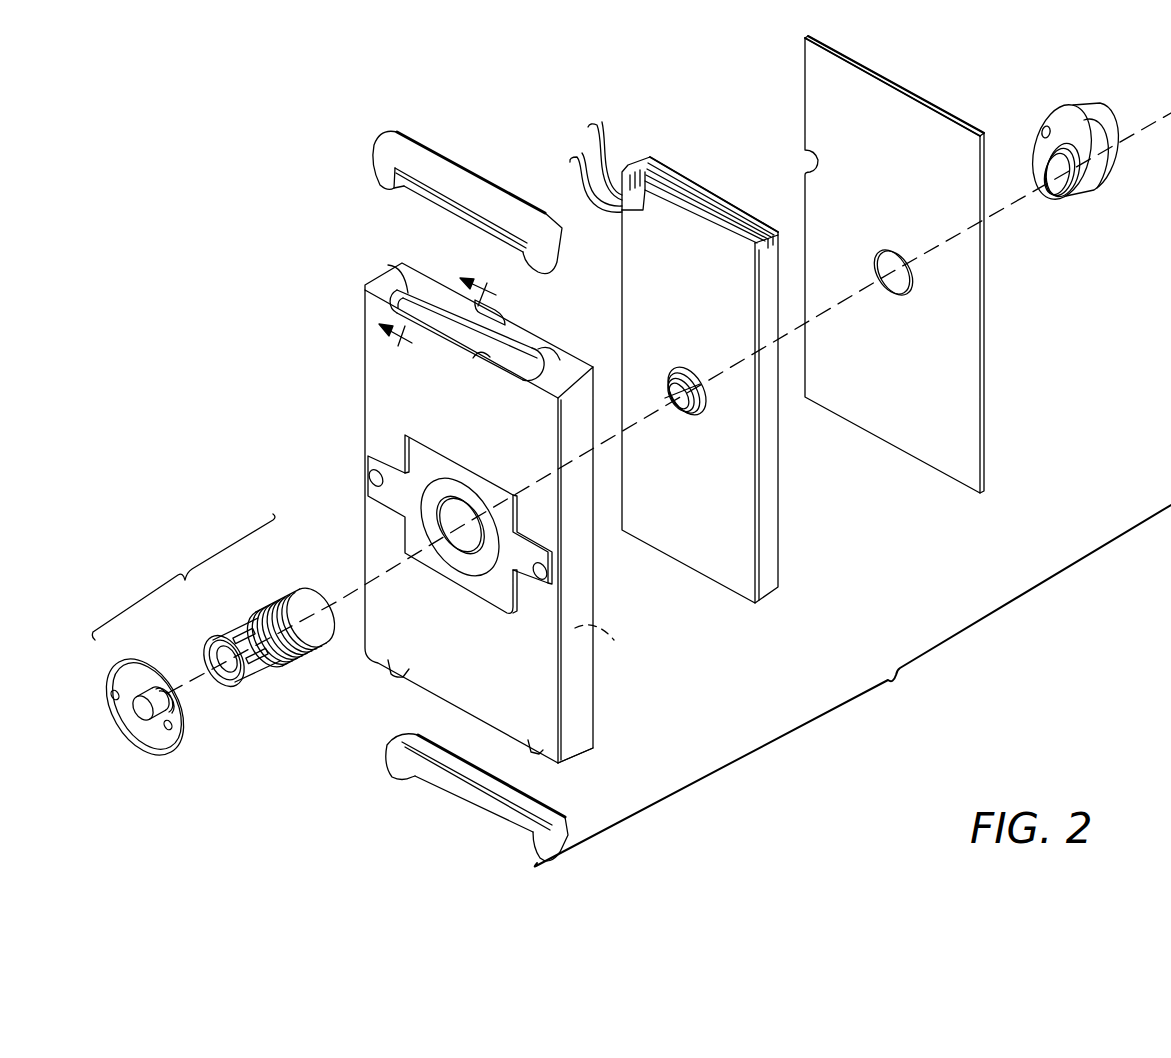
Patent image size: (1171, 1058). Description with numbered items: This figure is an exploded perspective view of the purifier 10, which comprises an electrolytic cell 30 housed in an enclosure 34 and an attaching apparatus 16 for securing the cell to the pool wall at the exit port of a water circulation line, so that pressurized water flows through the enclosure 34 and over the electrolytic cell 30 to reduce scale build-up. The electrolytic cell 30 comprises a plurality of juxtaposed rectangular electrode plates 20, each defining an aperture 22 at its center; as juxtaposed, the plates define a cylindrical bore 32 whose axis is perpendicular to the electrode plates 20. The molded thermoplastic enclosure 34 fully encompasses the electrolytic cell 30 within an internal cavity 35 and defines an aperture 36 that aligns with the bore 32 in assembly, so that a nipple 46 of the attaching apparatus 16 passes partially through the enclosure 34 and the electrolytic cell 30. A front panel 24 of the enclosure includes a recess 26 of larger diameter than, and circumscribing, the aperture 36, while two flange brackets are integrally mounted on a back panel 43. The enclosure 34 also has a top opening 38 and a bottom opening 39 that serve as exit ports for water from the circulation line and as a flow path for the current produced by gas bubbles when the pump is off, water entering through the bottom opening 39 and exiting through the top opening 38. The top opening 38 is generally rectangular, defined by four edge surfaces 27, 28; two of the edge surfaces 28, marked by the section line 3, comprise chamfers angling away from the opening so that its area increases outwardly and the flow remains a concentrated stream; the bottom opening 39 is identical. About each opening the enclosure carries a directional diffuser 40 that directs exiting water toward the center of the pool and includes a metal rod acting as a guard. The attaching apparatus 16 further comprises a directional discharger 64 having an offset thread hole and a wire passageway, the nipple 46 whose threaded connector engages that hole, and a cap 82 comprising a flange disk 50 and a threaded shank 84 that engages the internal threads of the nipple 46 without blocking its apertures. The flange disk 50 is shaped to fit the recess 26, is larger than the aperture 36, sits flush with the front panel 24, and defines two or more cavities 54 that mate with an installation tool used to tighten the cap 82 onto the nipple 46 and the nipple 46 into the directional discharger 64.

The purifier 10 is at (853, 686).
The attaching apparatus 16 is at (172, 553).
The electrode plates 20 is at (720, 580).
The aperture 22 is at (675, 408).
The front panel 24 is at (368, 373).
The recess 26 is at (437, 542).
The edge surfaces 27 is at (398, 278).
The edge surfaces 28 is at (522, 337).
The electrolytic cell 30 is at (683, 150).
The cylindrical bore 32 is at (683, 370).
The enclosure 34 is at (590, 731).
The internal cavity 35 is at (615, 640).
The aperture 36 is at (453, 541).
The top opening 38 is at (428, 298).
The bottom opening 39 is at (425, 686).
The directional diffuser 40 is at (510, 826).
The back panel 43 is at (950, 466).
The nipple 46 is at (235, 625).
The flange disk 50 is at (137, 735).
The cavities 54 is at (112, 694).
The directional discharger 64 is at (1068, 106).
The cap 82 is at (185, 760).
The threaded shank 84 is at (160, 692).
The section line 3- 3 is at (447, 326).